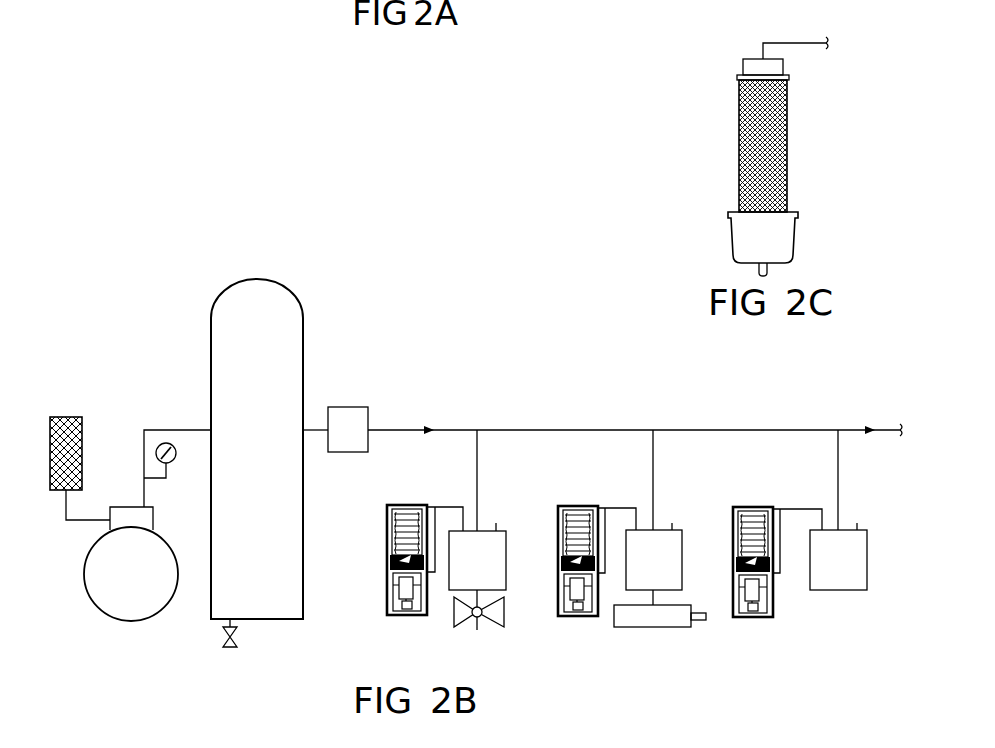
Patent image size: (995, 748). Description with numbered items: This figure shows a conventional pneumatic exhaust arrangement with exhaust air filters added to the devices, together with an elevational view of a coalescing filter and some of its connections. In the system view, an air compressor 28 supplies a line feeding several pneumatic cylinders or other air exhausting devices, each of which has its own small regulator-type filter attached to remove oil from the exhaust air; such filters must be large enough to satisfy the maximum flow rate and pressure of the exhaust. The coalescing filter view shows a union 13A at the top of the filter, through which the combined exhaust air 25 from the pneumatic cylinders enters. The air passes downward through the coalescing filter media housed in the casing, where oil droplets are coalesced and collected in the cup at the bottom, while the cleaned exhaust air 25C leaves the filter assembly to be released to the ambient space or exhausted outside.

In FIG. 2C, the combined exhaust air 25 is at (786, 43).
In FIG. 2C, the cleaned exhaust air 25C is at (737, 174).
In FIG. 2B, the air compressor 28 is at (108, 618).
In FIG. 2C, the union 13A is at (761, 57).